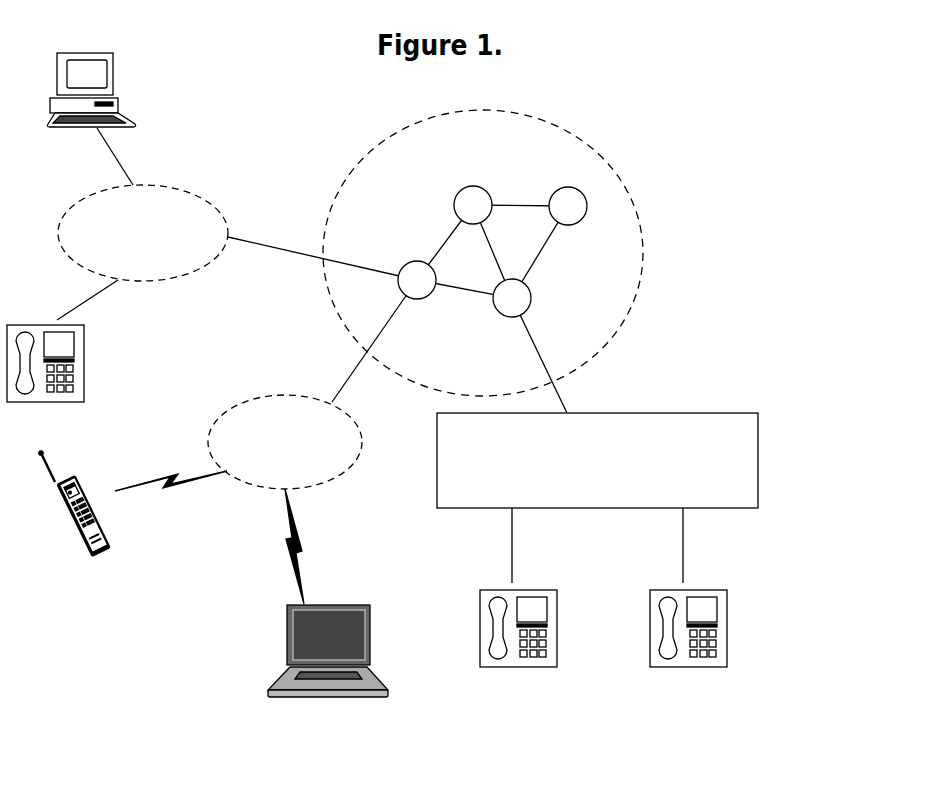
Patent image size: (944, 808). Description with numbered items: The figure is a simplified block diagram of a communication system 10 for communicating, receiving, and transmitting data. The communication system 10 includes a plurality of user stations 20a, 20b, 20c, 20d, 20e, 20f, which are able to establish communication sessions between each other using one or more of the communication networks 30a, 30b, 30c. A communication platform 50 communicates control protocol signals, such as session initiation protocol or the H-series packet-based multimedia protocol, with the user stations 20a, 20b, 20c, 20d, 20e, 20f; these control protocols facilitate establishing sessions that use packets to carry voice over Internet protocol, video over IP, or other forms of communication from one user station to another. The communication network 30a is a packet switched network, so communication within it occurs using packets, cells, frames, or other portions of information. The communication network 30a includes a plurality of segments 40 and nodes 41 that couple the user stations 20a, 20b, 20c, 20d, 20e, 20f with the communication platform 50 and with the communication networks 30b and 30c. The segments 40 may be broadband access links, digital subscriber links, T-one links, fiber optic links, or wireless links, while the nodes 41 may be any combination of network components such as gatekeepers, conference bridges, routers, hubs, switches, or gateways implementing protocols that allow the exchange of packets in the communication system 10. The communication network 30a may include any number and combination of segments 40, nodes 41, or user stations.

The communication system 10 is at (786, 260).
The user station 20a is at (115, 108).
The user station 20b is at (78, 358).
The user station 20c is at (77, 543).
The user station 20d is at (322, 697).
The user station 20e is at (528, 667).
The user station 20f is at (702, 667).
The communication network 30a is at (603, 280).
The communication network 30b is at (148, 243).
The communication network 30c is at (285, 442).
The segment 40 is at (265, 245).
The node 41 is at (455, 195).
The communication platform 50 is at (699, 413).